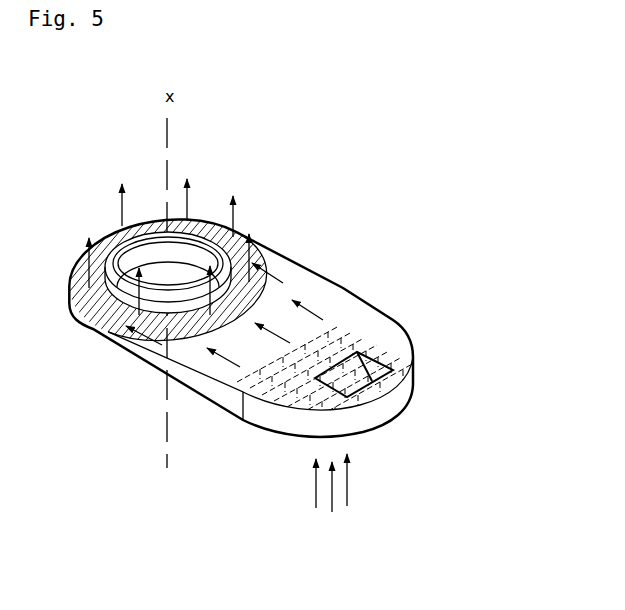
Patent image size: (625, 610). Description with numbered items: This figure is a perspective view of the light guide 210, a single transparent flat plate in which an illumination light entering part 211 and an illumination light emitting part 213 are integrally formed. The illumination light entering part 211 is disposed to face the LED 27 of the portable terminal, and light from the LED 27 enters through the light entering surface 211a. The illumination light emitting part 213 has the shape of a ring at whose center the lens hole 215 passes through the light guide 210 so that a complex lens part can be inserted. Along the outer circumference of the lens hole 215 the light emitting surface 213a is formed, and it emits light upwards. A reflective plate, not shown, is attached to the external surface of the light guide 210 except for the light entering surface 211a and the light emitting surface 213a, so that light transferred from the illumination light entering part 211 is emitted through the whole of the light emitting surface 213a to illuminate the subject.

The light guide 210 is at (433, 221).
The illumination light entering part 211 is at (378, 294).
The light entering surface 211a is at (387, 358).
The illumination light emitting part 213 is at (270, 212).
The light emitting surface 213a is at (262, 248).
The lens hole 215 is at (190, 252).
The LED 27 is at (339, 498).